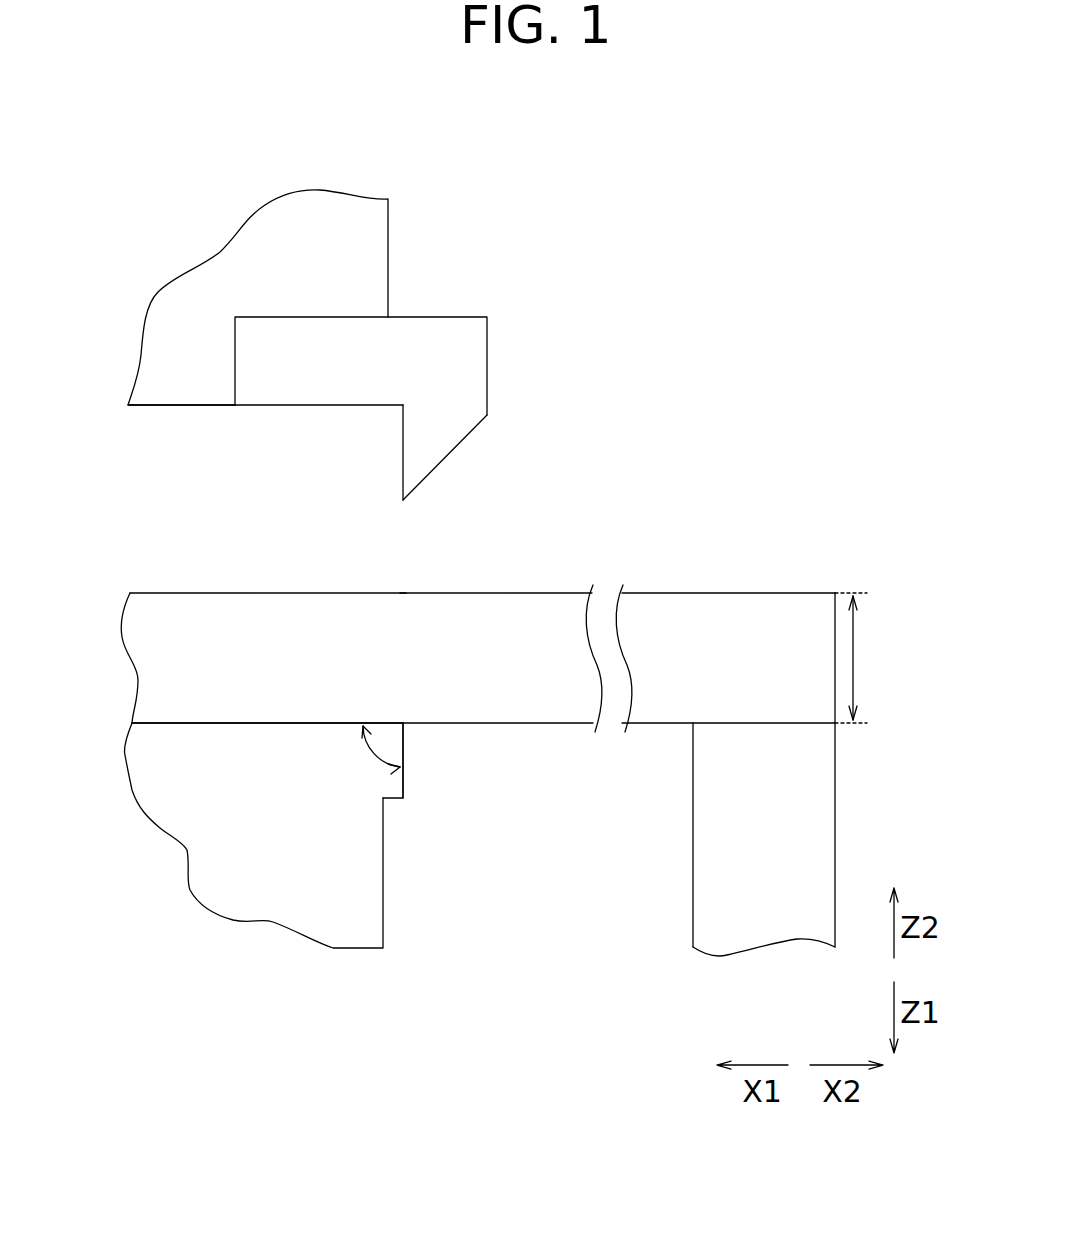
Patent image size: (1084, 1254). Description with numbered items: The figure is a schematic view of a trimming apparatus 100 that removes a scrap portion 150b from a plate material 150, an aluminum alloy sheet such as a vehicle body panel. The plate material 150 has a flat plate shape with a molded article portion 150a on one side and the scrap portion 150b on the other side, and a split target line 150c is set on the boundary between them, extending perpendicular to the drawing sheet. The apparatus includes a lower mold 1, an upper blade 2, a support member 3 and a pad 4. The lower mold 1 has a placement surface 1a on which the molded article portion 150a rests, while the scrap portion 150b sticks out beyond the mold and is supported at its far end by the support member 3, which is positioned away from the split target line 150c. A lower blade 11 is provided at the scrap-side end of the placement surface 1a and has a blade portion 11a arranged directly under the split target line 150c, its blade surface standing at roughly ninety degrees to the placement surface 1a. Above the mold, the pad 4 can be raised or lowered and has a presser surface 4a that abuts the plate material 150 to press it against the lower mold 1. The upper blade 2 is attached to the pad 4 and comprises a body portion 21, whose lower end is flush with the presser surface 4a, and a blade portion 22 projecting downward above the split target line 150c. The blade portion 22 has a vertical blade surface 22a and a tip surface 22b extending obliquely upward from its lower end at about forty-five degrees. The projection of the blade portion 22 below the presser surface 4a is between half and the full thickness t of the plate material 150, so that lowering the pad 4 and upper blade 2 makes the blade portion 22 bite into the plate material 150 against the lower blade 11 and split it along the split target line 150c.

The trimming apparatus 100 is at (660, 228).
The lower mold 1 is at (283, 845).
The placement surface 1a is at (180, 723).
The lower blade 11 is at (397, 802).
The blade portion 11a is at (405, 743).
The upper blade 2 is at (383, 370).
The body portion 21 is at (278, 395).
The blade portion 22 is at (427, 453).
The blade surface 22a is at (400, 427).
The tip surface 22b is at (448, 455).
The support member 3 is at (708, 852).
The pad 4 is at (377, 233).
The presser surface 4a is at (183, 407).
The plate material 150 is at (478, 616).
The molded article portion 150a is at (282, 610).
The scrap portion 150b is at (710, 610).
The split target line 150c is at (403, 593).
The thickness t is at (854, 658).